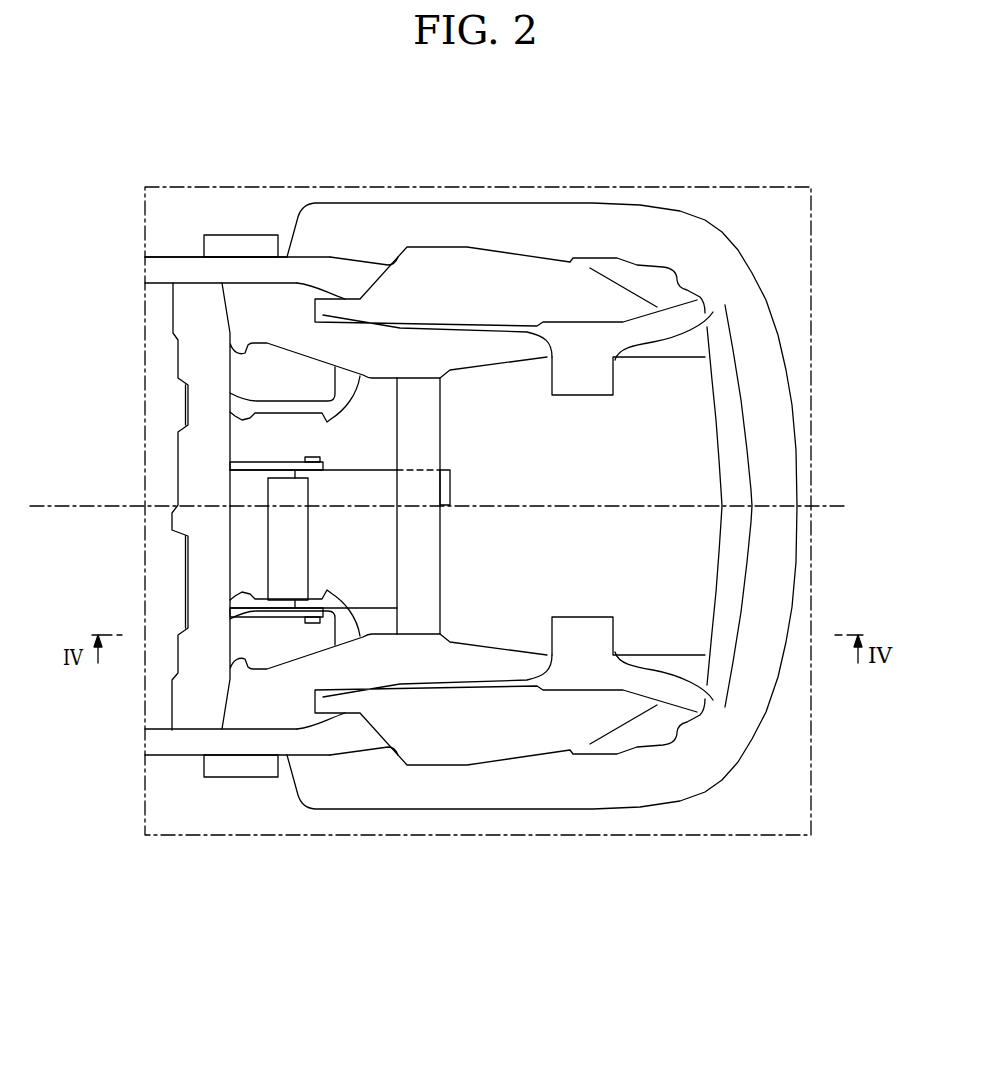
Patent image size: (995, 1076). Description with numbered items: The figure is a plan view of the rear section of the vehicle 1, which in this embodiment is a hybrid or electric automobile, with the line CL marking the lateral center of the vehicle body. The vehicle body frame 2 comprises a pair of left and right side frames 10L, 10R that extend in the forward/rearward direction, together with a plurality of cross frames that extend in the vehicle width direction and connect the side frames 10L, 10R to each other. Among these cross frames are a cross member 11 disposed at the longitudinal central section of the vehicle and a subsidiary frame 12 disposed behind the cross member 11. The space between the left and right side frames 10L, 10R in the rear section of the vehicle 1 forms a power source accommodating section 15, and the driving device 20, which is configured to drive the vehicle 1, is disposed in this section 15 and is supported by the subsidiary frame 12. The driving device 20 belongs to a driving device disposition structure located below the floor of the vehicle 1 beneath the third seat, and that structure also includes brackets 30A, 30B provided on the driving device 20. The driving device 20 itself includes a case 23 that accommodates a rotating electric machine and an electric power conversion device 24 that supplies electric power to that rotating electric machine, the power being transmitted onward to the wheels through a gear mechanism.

The vehicle 1 is at (860, 148).
The vehicle body frame 2 is at (168, 250).
The right side frame 10R is at (188, 267).
The left side frame 10L is at (172, 743).
The cross member 11 is at (198, 467).
The subsidiary frame 12 is at (432, 567).
The power source accommodating section 15 is at (355, 429).
The driving device 20 is at (291, 642).
The case 23 is at (370, 583).
The electric power conversion device 24 is at (278, 568).
The bracket 30A is at (253, 618).
The bracket 30B is at (250, 465).
The lateral center line CL is at (825, 506).